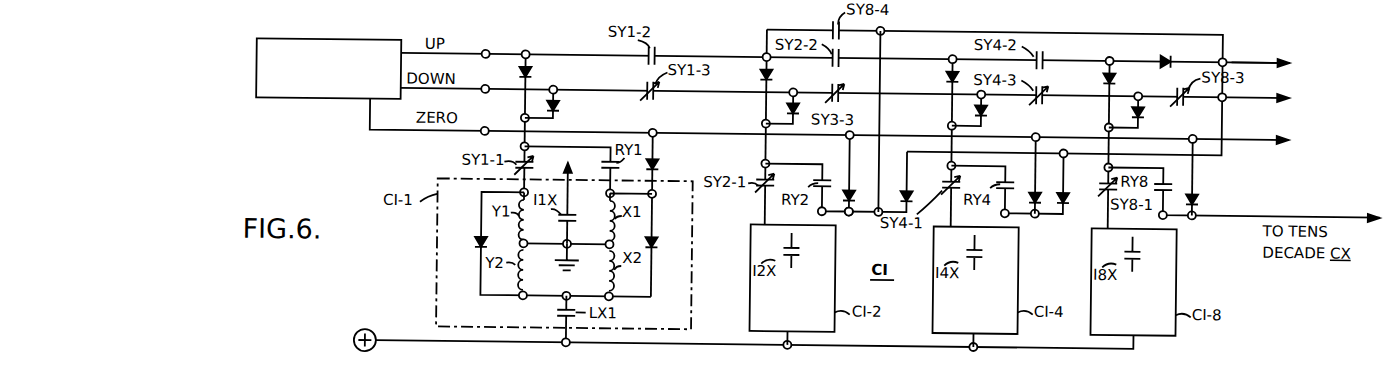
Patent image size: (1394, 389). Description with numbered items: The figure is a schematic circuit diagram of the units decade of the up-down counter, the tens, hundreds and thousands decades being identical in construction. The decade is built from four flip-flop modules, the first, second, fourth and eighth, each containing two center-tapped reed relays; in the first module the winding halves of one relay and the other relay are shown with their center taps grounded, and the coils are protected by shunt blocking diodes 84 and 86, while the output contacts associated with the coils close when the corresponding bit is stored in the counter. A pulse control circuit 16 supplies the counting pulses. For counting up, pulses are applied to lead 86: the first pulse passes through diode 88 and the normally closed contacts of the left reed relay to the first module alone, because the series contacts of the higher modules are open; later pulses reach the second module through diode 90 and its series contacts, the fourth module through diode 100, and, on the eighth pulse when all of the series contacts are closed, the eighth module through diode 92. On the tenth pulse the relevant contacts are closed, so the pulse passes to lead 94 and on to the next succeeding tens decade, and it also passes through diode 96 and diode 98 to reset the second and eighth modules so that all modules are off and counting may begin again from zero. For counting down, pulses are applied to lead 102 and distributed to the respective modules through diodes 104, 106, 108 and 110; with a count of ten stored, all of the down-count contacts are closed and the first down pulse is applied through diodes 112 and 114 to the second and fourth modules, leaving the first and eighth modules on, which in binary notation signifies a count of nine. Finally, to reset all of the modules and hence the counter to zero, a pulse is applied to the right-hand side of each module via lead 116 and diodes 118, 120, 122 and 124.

The pulse control circuit 16 is at (301, 104).
The lead 86 is at (520, 56).
The lead 102 is at (495, 79).
The lead 116 is at (492, 132).
The diode 88 is at (537, 77).
The diode 104 is at (558, 112).
The diode 90 is at (756, 78).
The diode 106 is at (783, 110).
The diode 100 is at (945, 81).
The diode 108 is at (988, 112).
The diode 92 is at (1102, 76).
The diode 110 is at (1144, 109).
The diode 98 is at (1159, 56).
The lead 94 is at (1257, 57).
The diode 96 is at (853, 195).
The diode 114 is at (902, 191).
The diode 120 is at (847, 216).
The diode 122 is at (1040, 192).
The diode 112 is at (1067, 206).
The diode 124 is at (1195, 197).
The shunt blocking diode 84 is at (475, 254).
The diode 118 is at (659, 168).